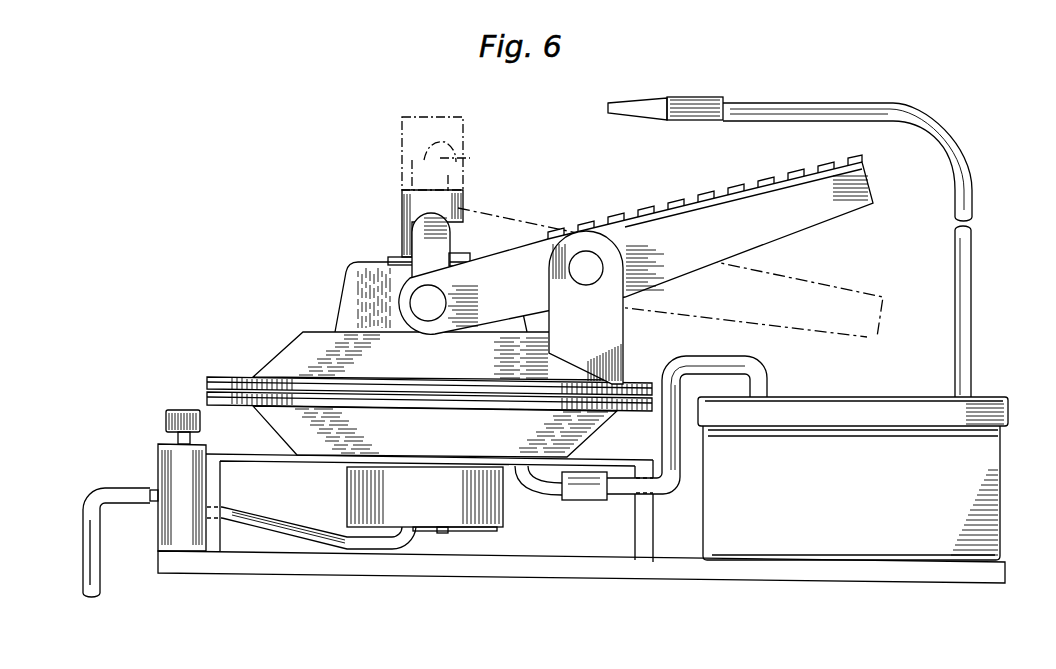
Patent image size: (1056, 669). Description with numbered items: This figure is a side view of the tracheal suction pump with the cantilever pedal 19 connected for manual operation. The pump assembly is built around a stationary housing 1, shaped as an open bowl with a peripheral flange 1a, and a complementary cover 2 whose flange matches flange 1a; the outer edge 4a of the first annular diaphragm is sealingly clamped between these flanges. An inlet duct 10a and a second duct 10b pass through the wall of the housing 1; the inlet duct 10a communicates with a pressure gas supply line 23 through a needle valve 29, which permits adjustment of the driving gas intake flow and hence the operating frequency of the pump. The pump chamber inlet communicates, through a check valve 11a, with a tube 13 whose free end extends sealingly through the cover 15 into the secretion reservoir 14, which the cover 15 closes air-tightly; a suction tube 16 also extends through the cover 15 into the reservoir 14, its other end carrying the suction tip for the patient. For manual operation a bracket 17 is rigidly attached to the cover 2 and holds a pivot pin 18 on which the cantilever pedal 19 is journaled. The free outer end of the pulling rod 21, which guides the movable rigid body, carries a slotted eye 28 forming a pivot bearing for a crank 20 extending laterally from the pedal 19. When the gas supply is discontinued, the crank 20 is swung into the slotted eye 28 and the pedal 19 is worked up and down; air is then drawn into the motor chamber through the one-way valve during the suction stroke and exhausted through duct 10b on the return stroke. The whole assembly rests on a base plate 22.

The stationary housing 1 is at (287, 433).
The peripheral flange 1a is at (228, 402).
The cover 2 is at (298, 352).
The outer edge of first annular diaphragm 4a is at (228, 388).
The inlet duct 10a is at (407, 548).
The duct 10b is at (442, 533).
The check valve 11a is at (573, 496).
The tube 13 is at (727, 362).
The secretion reservoir 14 is at (967, 473).
The cover 15 is at (910, 410).
The suction tube 16 is at (966, 168).
The bracket 17 is at (605, 322).
The pivot pin 18 is at (583, 263).
The cantilever pedal 19 is at (678, 232).
The crank 20 is at (427, 252).
The pulling rod 21 is at (413, 208).
The base plate 22 is at (755, 571).
The pressure gas supply line 23 is at (102, 497).
The slotted eye 28 is at (447, 158).
The needle valve 29 is at (180, 528).